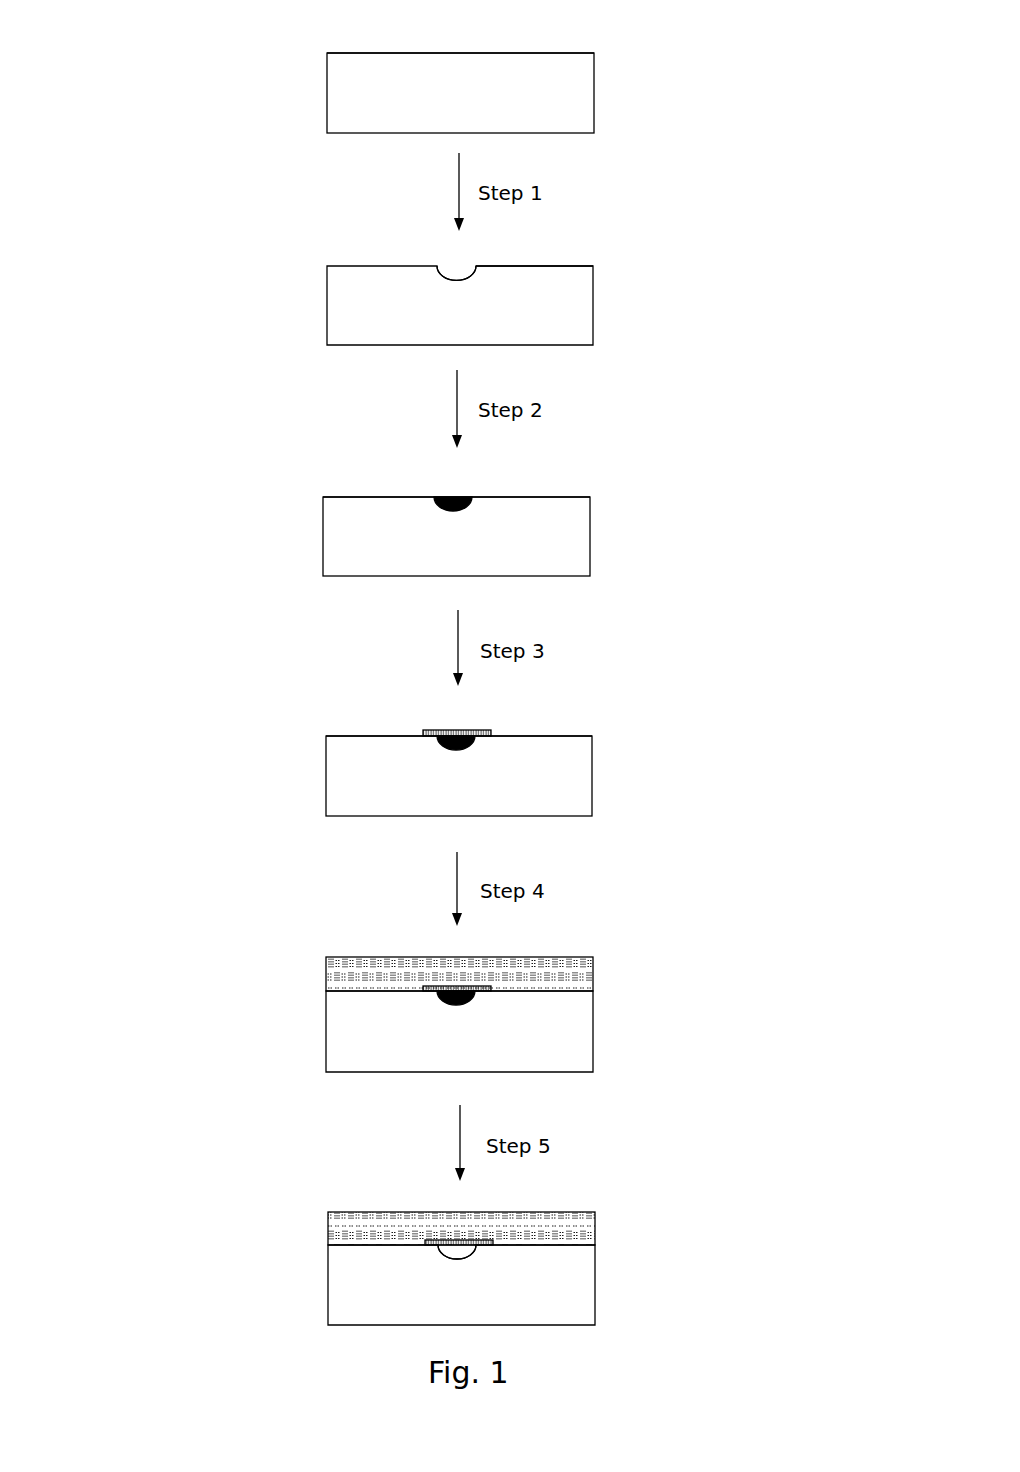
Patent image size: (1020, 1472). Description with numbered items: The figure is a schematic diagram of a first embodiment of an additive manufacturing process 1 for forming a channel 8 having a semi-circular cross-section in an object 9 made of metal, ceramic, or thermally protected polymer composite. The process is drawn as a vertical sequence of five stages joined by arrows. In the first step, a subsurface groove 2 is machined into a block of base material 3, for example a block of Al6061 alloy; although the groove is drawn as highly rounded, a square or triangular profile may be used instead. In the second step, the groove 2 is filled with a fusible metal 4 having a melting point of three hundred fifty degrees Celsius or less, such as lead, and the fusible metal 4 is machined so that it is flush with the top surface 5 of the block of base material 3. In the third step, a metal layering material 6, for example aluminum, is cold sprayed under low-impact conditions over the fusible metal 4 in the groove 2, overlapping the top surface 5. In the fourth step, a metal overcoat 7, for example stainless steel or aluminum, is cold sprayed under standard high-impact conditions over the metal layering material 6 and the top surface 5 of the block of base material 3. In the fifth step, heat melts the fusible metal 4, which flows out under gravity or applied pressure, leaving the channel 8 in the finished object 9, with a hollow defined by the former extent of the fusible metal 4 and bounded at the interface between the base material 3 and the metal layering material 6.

The additive manufacturing process 1 is at (160, 178).
The subsurface groove 2 is at (456, 272).
The block of base material 3 is at (578, 95).
The fusible metal 4 is at (452, 497).
The top surface 5 is at (567, 53).
The metal layering material 6 is at (456, 730).
The metal overcoat 7 is at (580, 978).
The channel 8 is at (455, 1258).
The object 9 is at (292, 1251).